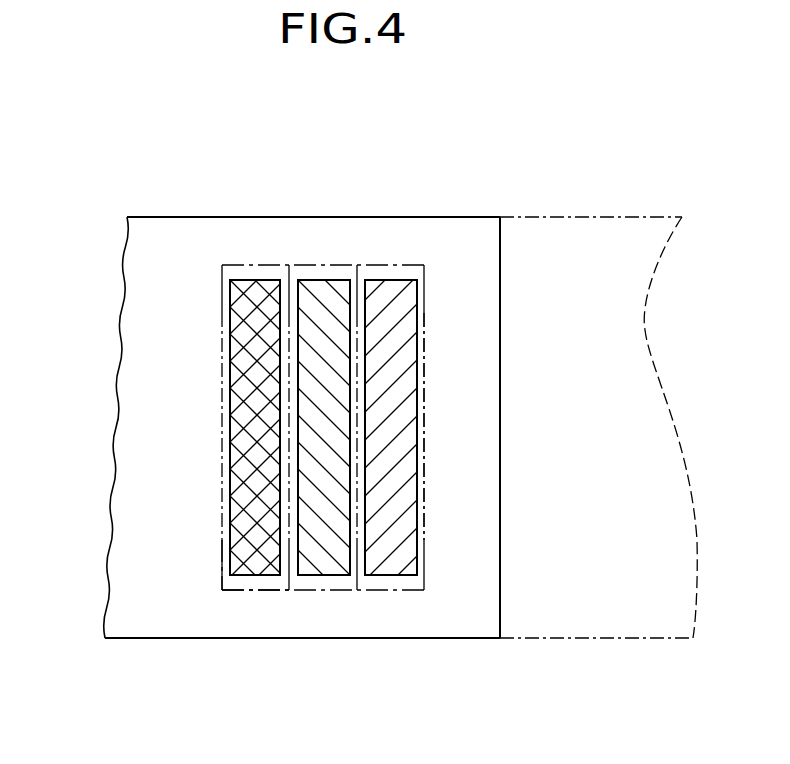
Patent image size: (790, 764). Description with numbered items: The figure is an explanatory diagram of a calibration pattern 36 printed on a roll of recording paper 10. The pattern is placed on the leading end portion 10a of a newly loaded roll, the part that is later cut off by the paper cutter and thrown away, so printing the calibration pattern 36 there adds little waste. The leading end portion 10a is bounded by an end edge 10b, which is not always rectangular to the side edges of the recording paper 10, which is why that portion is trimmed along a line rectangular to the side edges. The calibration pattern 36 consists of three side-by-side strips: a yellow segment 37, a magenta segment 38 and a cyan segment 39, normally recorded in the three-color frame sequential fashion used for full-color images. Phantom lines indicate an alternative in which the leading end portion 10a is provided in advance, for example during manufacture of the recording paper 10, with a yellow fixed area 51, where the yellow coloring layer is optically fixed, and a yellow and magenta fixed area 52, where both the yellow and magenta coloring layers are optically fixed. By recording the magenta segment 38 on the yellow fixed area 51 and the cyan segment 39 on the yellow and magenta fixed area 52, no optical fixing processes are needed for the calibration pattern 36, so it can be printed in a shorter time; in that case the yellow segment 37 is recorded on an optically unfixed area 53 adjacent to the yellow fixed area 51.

The recording paper 10 is at (188, 217).
The leading end portion 10a is at (401, 232).
The end edge 10b is at (120, 309).
The calibration pattern 36 is at (289, 247).
The yellow segment 37 is at (415, 352).
The magenta segment 38 is at (333, 577).
The cyan segment 39 is at (232, 465).
The yellow fixed area 51 is at (320, 582).
The yellow and magenta fixed area 52 is at (228, 565).
The optically unfixed area 53 is at (420, 475).